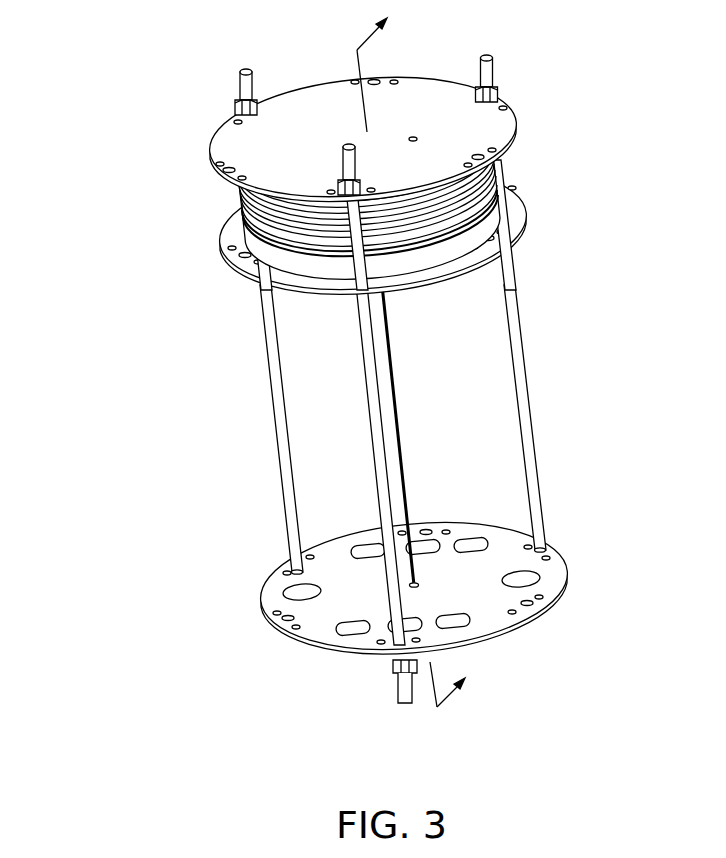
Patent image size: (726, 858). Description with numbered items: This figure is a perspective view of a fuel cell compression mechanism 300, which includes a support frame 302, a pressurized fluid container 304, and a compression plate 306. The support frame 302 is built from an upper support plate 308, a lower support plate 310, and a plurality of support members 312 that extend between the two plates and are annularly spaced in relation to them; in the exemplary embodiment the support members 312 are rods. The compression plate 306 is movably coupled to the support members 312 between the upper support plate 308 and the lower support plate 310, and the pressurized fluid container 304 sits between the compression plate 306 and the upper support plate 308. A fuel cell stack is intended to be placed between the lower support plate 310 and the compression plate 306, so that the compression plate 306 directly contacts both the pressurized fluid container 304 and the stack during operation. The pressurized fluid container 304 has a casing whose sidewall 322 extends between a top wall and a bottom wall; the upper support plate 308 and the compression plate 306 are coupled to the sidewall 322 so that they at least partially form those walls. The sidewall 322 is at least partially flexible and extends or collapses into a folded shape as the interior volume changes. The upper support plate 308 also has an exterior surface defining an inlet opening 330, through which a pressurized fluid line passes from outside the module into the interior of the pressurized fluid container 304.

The fuel cell compression mechanism 300 is at (322, 356).
The support frame 302 is at (283, 603).
The pressurized fluid container 304 is at (246, 235).
The compression plate 306 is at (450, 255).
The upper support plate 308 is at (495, 120).
The lower support plate 310 is at (487, 620).
The support members 312 is at (278, 377).
The sidewall 322 is at (500, 205).
The inlet opening 330 is at (413, 134).